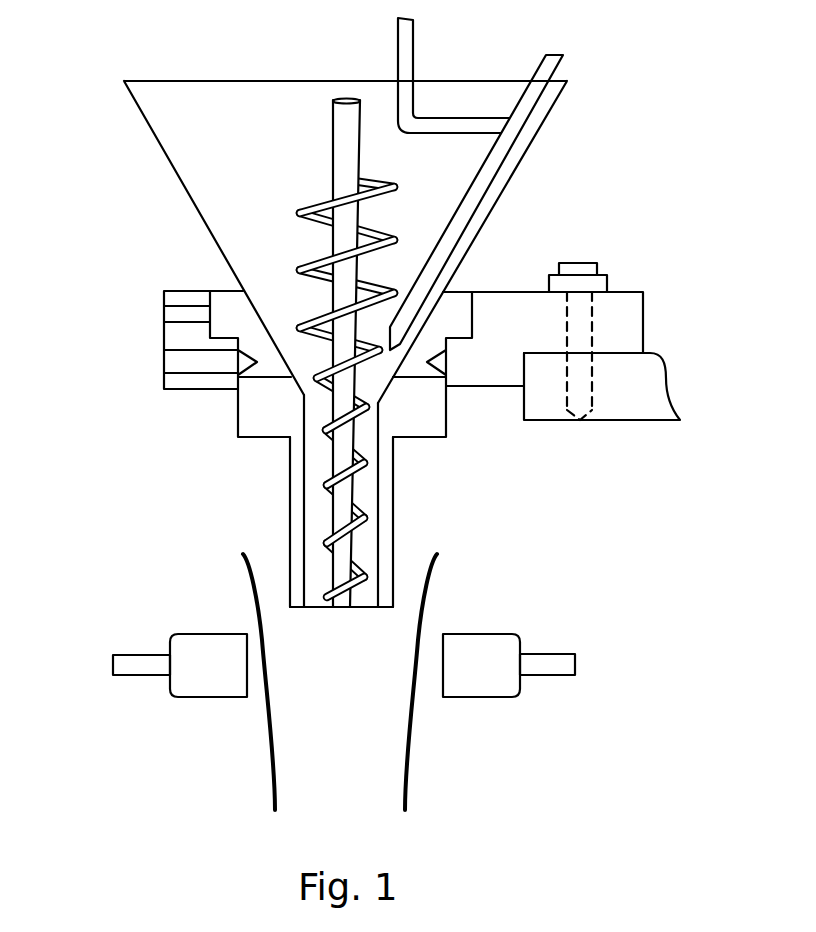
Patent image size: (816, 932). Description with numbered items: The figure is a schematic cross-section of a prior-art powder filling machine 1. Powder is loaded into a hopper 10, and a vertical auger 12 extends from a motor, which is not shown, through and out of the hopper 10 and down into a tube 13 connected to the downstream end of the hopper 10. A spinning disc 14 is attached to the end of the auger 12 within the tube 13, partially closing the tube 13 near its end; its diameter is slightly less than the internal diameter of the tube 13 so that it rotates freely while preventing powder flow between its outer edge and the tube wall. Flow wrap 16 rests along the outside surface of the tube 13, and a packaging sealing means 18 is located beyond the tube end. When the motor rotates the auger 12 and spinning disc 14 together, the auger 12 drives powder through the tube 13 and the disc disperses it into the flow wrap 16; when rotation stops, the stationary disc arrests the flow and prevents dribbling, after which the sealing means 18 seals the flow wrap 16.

The powder filling machine 1 is at (704, 85).
The hopper 10 is at (167, 155).
The vertical auger 12 is at (297, 272).
The tube 13 is at (393, 518).
The spinning disc 14 is at (393, 605).
The flow wrap 16 is at (247, 572).
The packaging sealing means 18 is at (172, 633).